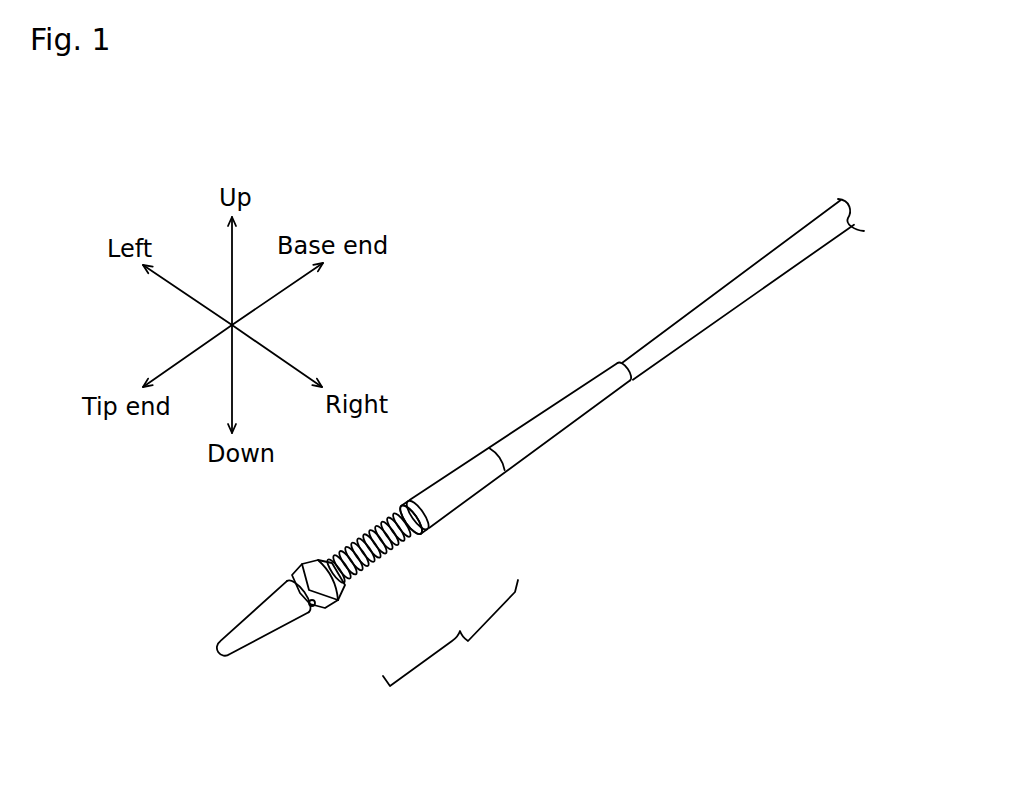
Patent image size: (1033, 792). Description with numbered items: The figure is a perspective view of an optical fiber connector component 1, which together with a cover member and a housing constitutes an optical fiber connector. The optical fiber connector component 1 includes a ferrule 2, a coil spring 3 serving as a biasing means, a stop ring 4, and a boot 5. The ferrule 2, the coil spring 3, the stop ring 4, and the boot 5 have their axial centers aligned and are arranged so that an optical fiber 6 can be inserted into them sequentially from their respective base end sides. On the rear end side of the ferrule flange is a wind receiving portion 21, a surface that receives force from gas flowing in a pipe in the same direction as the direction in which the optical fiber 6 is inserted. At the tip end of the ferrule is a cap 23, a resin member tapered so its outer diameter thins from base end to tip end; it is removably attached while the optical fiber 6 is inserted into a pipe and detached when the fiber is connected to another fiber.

The optical fiber connector component 1 is at (450, 633).
The ferrule 2 is at (333, 603).
The coil spring 3 is at (378, 560).
The stop ring 4 is at (428, 527).
The boot 5 is at (463, 493).
The optical fiber 6 is at (702, 315).
The wind receiving portion 21 is at (412, 498).
The cap 23 is at (276, 627).